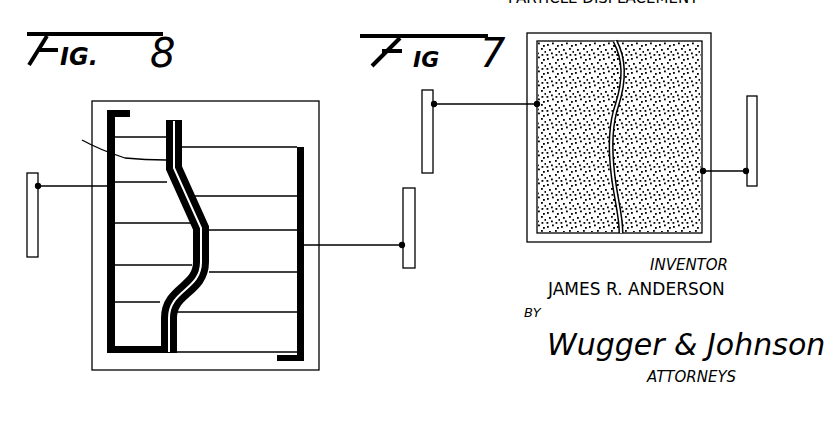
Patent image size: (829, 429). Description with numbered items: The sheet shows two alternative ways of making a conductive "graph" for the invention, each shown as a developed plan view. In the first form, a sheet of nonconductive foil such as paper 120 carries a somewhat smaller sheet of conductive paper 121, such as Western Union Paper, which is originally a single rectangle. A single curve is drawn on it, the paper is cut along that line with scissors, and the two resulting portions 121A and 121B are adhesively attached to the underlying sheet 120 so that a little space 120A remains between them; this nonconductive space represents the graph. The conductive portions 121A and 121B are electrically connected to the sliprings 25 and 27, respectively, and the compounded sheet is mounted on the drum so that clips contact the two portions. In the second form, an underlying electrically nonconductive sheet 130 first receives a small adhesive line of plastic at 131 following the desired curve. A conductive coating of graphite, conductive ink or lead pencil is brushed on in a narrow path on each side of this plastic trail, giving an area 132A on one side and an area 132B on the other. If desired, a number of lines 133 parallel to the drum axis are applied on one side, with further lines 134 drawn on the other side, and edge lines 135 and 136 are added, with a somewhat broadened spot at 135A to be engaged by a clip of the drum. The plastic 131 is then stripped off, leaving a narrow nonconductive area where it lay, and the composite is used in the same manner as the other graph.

In FIG. 8, the slipring 25 is at (403, 263).
In FIG. 7, the slipring 25 is at (757, 128).
In FIG. 8, the slipring 27 is at (38, 250).
In FIG. 7, the slipring 27 is at (433, 147).
In FIG. 7, the sheet of nonconductive foil 120 is at (711, 72).
In FIG. 7, the space 120A is at (622, 212).
In FIG. 7, the sheet of conductive paper 121 is at (658, 123).
In FIG. 7, the conductive portion 121A is at (677, 57).
In FIG. 7, the conductive portion 121B is at (586, 47).
In FIG. 8, the electrically nonconductive sheet 130 is at (310, 177).
In FIG. 8, the plastic strip 131 is at (177, 120).
In FIG. 8, the conductive area 132A is at (104, 145).
In FIG. 8, the conductive area 132B is at (185, 137).
In FIG. 8, the lines 133 is at (283, 144).
In FIG. 8, the conductor 134 is at (146, 137).
In FIG. 8, the edge line 135 is at (303, 158).
In FIG. 8, the broadened spot 135A is at (304, 358).
In FIG. 8, the edge line 136 is at (110, 110).